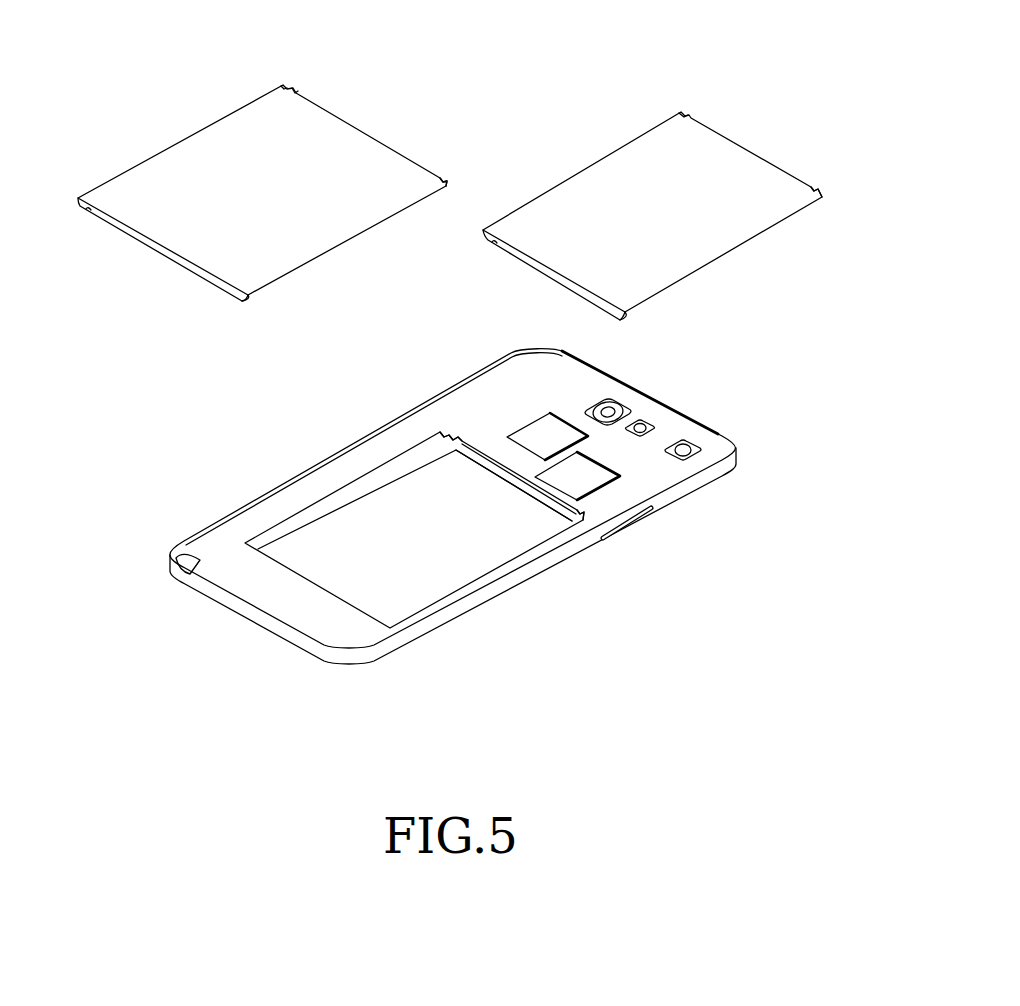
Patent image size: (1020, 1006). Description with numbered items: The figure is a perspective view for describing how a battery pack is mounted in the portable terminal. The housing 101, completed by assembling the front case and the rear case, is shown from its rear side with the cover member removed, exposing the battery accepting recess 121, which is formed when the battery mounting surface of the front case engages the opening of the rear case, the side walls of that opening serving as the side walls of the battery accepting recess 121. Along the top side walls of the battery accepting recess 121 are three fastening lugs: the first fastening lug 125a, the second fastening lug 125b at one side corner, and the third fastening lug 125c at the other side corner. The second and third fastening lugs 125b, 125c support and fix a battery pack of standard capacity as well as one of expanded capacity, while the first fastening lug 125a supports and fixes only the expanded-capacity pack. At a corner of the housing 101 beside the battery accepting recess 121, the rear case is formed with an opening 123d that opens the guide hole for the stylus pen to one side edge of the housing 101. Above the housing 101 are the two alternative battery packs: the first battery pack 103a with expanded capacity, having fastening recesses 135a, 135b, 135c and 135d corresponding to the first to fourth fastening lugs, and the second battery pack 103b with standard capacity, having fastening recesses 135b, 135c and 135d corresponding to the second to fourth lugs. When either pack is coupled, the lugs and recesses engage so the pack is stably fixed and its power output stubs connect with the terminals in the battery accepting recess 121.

The housing 101 is at (688, 412).
The first battery pack 103a is at (393, 141).
The second battery pack 103b is at (762, 155).
The battery accepting recess 121 is at (493, 548).
The opening 123d is at (180, 572).
The first fastening lug 125a is at (448, 432).
The second fastening lug 125b is at (593, 508).
The third fastening lug 125c is at (425, 460).
The fastening recess 135a is at (281, 84).
The fastening recess 135b is at (446, 182).
The fastening recess 135c is at (296, 90).
The fastening recess 135d is at (90, 213).